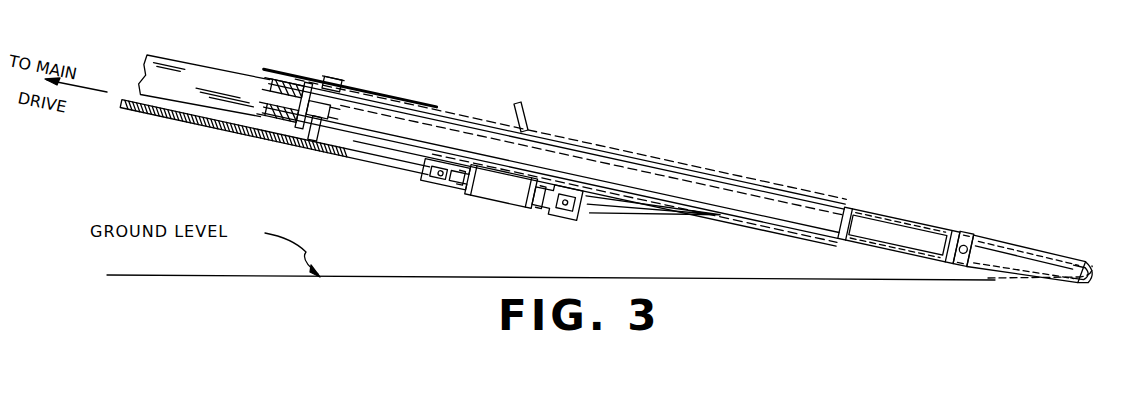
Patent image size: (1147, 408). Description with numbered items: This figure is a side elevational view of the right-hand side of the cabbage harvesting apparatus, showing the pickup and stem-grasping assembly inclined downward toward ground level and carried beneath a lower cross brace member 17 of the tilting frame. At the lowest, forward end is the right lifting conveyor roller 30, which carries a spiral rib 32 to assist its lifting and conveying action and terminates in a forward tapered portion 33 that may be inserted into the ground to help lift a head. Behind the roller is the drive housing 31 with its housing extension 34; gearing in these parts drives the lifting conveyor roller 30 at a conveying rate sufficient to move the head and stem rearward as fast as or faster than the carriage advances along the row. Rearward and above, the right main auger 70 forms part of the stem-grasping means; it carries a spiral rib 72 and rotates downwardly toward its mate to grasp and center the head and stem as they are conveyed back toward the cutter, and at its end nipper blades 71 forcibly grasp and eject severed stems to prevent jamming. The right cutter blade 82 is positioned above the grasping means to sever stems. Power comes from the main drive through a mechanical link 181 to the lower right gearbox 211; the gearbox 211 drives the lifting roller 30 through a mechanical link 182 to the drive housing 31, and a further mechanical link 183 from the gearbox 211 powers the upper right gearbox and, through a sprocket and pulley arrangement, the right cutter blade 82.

The lower cross brace member 17 is at (268, 86).
The right lifting conveyor roller 30 is at (1010, 256).
The drive housing 31 is at (917, 221).
The spiral rib 32 is at (1070, 285).
The forward tapered portion 33 is at (1080, 267).
The housing extension 34 is at (952, 238).
The right main auger 70 is at (656, 178).
The nipper blades 71 is at (321, 116).
The spiral rib 72 is at (765, 190).
The right cutter blade 82 is at (395, 103).
The mechanical link 181 is at (245, 130).
The mechanical link 182 is at (652, 212).
The mechanical link 183 is at (523, 113).
The lower right gearbox 211 is at (500, 188).